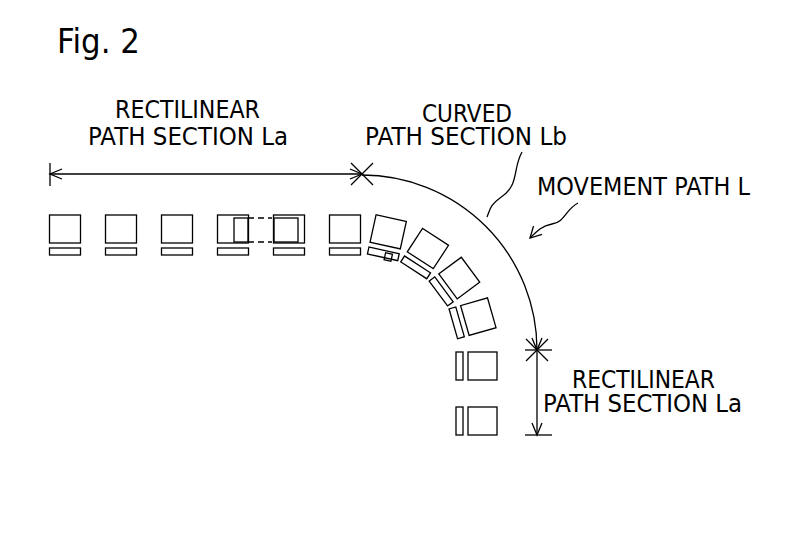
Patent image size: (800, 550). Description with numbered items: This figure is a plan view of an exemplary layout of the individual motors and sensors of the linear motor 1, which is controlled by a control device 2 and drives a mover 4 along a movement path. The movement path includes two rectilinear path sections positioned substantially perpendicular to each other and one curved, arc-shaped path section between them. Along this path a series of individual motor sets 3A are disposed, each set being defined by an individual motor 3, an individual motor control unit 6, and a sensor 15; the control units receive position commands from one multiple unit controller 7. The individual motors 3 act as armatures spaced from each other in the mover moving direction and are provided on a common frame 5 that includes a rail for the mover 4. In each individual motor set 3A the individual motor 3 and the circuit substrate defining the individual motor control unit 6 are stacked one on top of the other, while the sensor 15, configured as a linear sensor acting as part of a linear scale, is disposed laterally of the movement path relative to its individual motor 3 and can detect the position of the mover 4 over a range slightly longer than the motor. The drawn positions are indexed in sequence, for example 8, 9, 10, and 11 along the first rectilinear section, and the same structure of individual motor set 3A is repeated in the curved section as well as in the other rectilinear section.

The linear motor 1 is at (492, 366).
The control device 2 is at (485, 317).
The individual motor 3 is at (527, 477).
The individual motor set 3A is at (57, 262).
The mover 4 is at (261, 238).
The frame 5 is at (388, 221).
The individual motor control unit 6 is at (345, 215).
The multiple unit controller 7 is at (289, 215).
The individual motor at position i= 8 is at (233, 215).
The individual motor at position i= 9 is at (177, 215).
The individual motor at position i= 10 is at (121, 215).
The individual motor at position i= 11 is at (65, 215).
The sensor 15 is at (378, 262).